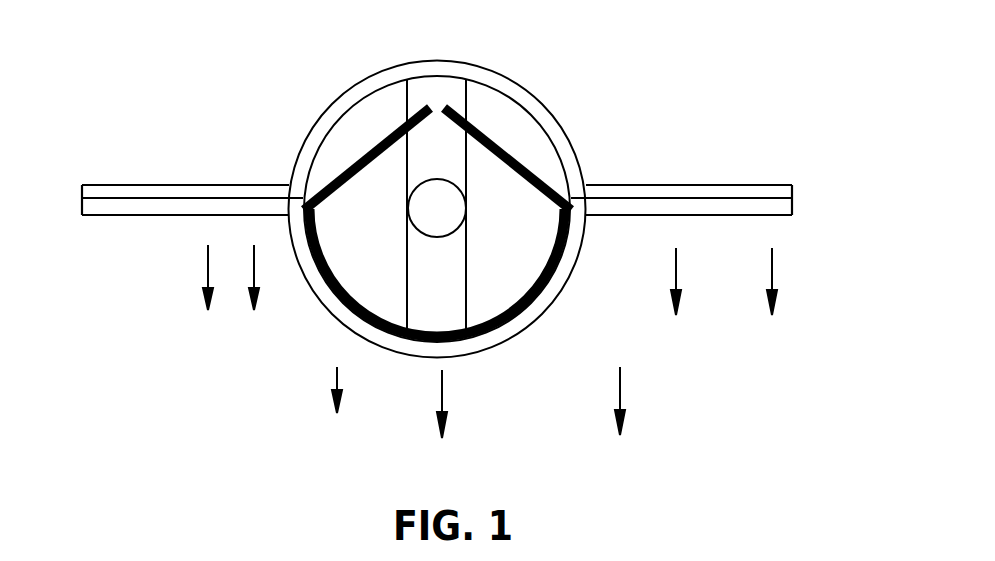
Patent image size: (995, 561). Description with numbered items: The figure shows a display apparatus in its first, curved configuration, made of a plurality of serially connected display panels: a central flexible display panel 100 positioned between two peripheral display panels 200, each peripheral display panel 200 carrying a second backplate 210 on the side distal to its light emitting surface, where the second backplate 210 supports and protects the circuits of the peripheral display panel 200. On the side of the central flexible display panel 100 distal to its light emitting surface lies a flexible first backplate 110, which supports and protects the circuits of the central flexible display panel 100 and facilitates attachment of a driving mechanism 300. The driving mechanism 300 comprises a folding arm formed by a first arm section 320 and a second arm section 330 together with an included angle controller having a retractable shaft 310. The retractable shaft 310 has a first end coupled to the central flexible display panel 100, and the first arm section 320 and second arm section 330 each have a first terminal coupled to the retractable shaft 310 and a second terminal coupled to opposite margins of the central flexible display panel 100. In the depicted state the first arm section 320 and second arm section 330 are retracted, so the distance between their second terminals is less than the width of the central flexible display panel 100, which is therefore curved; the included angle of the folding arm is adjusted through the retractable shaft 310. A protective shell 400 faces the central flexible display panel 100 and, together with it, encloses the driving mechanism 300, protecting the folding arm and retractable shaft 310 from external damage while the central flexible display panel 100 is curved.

The central flexible display panel 100 is at (572, 305).
The first backplate 110 is at (336, 292).
The peripheral display panel 200 is at (154, 252).
The second backplate 210 is at (148, 193).
The driving mechanism 300 is at (517, 174).
The retractable shaft 310 is at (437, 265).
The first arm section 320 is at (497, 145).
The second arm section 330 is at (380, 140).
The protective shell 400 is at (320, 132).